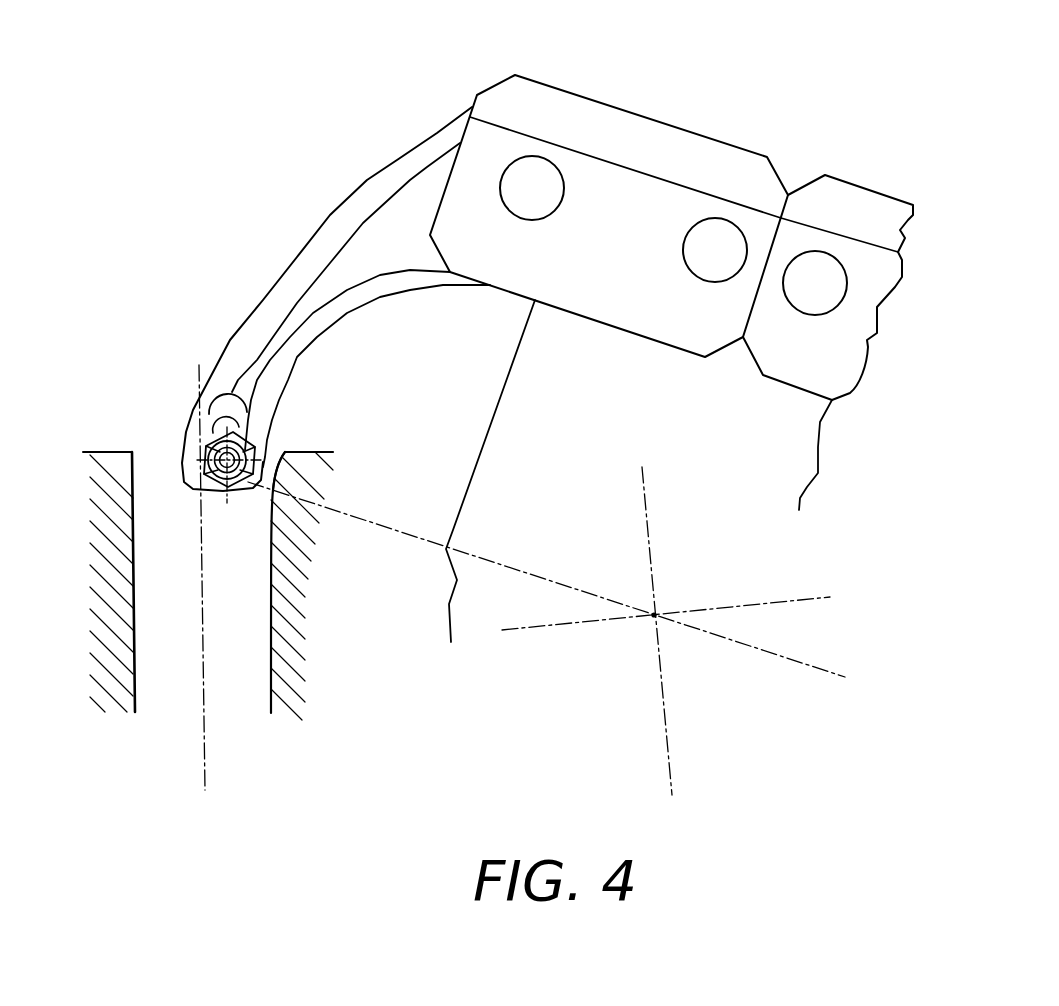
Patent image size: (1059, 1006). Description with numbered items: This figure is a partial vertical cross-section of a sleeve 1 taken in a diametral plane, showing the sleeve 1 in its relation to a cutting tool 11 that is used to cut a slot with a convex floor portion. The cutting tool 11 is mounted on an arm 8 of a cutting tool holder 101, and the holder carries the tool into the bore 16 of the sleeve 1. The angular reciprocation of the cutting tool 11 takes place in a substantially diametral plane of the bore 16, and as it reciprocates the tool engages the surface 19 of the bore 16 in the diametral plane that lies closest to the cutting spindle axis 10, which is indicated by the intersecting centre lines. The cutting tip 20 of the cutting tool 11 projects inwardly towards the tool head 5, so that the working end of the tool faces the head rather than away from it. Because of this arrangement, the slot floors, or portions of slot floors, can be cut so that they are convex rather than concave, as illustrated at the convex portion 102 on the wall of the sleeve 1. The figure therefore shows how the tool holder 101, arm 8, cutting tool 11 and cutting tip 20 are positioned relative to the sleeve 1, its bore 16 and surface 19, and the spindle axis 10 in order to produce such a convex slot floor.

The sleeve 1 is at (113, 472).
The tool head 5 is at (783, 448).
The arm 8 is at (318, 245).
The cutting spindle axis 10 is at (654, 615).
The cutting tool 11 is at (277, 455).
The bore 16 is at (169, 672).
The surface 19 is at (322, 600).
The cutting tip 20 is at (260, 487).
The cutting tool holder 101 is at (503, 142).
The convex slot floor portion 102 is at (285, 452).